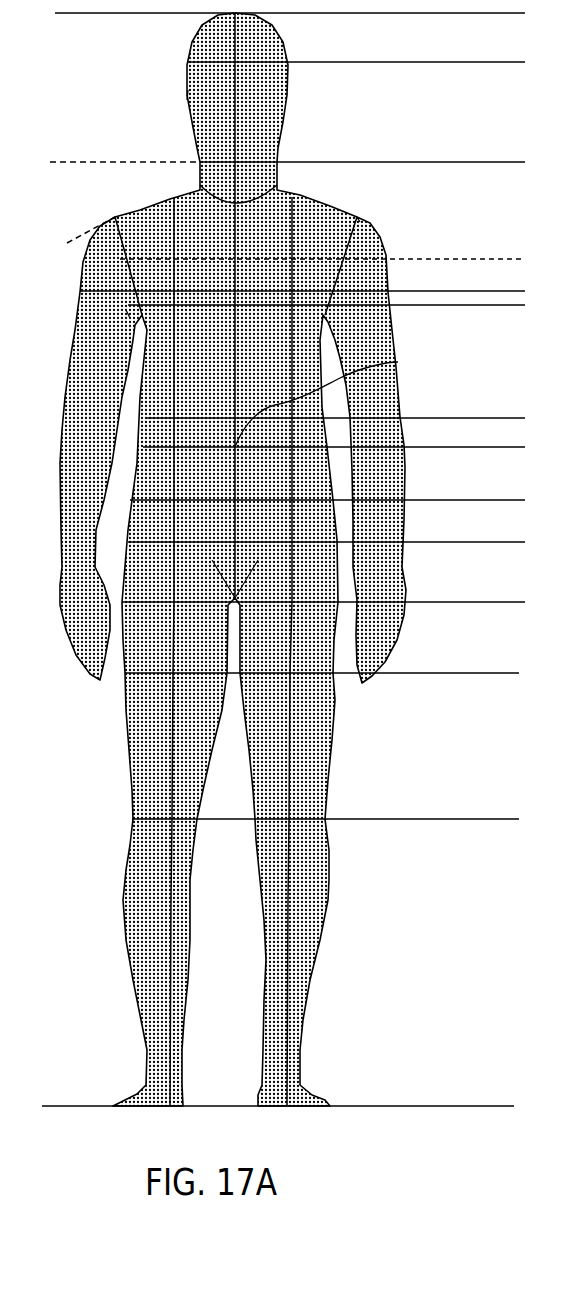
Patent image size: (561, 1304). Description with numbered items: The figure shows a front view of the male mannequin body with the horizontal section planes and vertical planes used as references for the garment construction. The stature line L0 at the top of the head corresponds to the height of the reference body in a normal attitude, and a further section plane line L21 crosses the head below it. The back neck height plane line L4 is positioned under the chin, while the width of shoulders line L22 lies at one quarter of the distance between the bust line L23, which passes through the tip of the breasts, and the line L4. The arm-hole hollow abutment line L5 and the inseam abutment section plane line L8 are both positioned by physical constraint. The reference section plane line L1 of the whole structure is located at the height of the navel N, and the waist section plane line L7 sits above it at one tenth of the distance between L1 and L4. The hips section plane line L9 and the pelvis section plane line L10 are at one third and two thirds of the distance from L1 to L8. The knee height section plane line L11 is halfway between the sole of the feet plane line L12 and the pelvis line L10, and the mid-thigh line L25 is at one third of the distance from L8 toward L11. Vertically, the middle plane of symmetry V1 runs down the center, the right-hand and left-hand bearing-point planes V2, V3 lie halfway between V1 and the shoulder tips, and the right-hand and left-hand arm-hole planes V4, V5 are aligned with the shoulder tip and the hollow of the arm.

The stature line L0 is at (518, 13).
The section plane line L21 is at (493, 62).
The back neck height plane line L4 is at (393, 161).
The width of shoulders line L22 is at (407, 258).
The arm-hole hollow abutment line L5 is at (448, 291).
The bust line L23 is at (485, 305).
The navel N is at (398, 362).
The waist section plane line L7 is at (497, 418).
The reference section plane line L1 is at (518, 447).
The hips section plane line L9 is at (468, 500).
The pelvis section plane line L10 is at (493, 542).
The inseam abutment section plane line L8 is at (480, 602).
The mid-thigh line L25 is at (480, 673).
The knee height section plane line L11 is at (480, 819).
The sole of the feet plane line L12 is at (477, 1106).
The vertical middle plane V1 is at (190, 96).
The left-hand vertical plane V3 is at (302, 208).
The left-hand vertical arm-hole plane V5 is at (357, 227).
The right-hand vertical plane V2 is at (173, 293).
The right-hand vertical arm-hole plane V4 is at (126, 310).